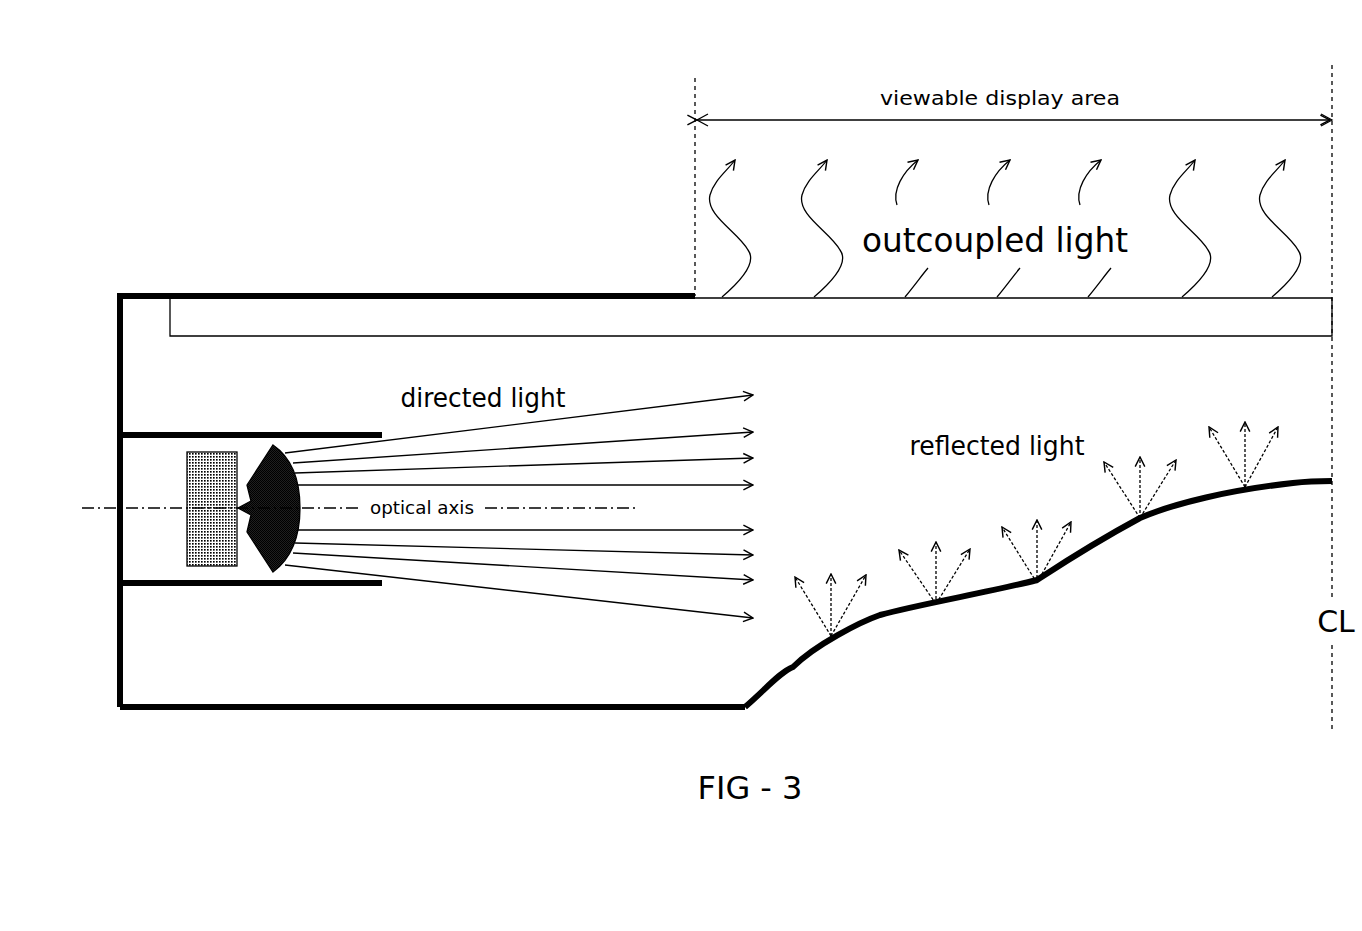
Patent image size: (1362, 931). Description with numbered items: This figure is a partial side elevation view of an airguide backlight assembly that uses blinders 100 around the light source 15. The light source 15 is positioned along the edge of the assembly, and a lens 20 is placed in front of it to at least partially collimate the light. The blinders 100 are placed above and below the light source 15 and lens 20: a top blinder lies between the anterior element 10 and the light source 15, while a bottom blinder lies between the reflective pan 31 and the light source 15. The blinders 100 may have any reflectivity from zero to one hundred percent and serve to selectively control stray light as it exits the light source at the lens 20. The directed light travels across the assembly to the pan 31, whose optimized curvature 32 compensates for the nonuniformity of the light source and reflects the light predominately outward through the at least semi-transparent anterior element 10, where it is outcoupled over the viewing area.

The anterior element 10 is at (751, 317).
The blinders 100 is at (355, 577).
The light source 15 is at (217, 547).
The lens 20 is at (268, 570).
The reflective pan 31 is at (590, 702).
The optimized curvature 32 is at (985, 600).